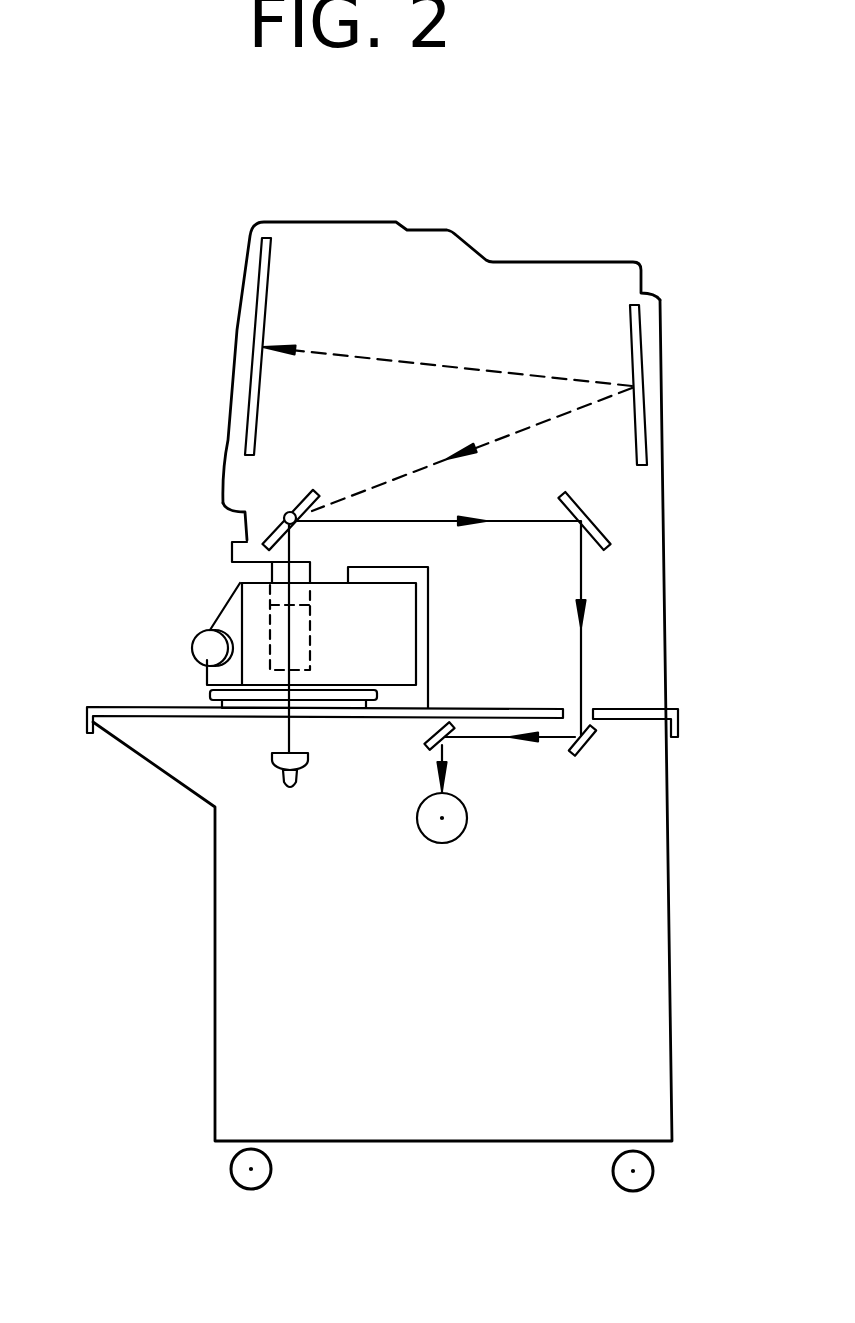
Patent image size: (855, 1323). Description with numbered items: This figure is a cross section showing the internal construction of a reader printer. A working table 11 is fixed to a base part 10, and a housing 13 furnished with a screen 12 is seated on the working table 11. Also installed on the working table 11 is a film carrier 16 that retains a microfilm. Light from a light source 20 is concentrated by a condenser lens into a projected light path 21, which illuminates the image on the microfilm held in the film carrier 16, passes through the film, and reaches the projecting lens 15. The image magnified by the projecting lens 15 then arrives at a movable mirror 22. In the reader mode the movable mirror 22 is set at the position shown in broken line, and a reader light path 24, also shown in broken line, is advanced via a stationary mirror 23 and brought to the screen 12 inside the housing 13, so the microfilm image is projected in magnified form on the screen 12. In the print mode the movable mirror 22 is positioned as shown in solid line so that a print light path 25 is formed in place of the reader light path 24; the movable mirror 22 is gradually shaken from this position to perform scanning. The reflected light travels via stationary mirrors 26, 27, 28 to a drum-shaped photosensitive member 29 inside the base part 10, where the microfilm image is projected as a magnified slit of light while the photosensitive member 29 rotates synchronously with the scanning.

The base part 10 is at (672, 827).
The working table 11 is at (142, 717).
The screen 12 is at (262, 322).
The housing 13 is at (432, 246).
The projecting lens 15 is at (318, 620).
The film carrier 16 is at (390, 690).
The light source 20 is at (290, 792).
The projected light path 21 is at (289, 657).
The movable mirror 22 is at (306, 492).
The stationary mirror 23 is at (641, 375).
The reader light path 24 is at (472, 367).
The print light path 25 is at (582, 587).
The stationary mirror 26 is at (600, 530).
The stationary mirror 27 is at (592, 744).
The stationary mirror 28 is at (450, 722).
The photosensitive member 29 is at (447, 830).